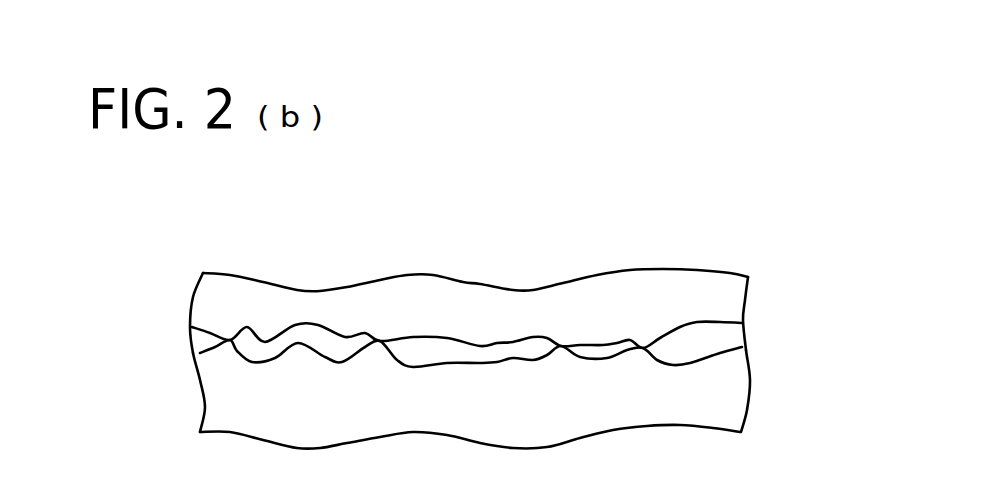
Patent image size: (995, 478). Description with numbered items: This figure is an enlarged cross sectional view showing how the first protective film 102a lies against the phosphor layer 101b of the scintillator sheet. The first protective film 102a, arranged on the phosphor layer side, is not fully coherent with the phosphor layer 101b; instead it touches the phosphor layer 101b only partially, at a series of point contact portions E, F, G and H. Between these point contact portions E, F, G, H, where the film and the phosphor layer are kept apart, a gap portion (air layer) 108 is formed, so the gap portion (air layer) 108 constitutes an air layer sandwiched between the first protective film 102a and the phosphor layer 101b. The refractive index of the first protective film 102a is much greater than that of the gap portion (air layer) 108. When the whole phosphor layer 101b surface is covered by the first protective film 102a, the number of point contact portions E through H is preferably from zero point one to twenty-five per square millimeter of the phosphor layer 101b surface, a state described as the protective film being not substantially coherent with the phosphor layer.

The first protective film 102a is at (728, 300).
The gap portion (air layer) 108 is at (732, 340).
The phosphor layer 101b is at (730, 405).
The point contact portion E is at (230, 340).
The point contact portion F is at (380, 341).
The point contact portion G is at (561, 346).
The point contact portion H is at (643, 348).